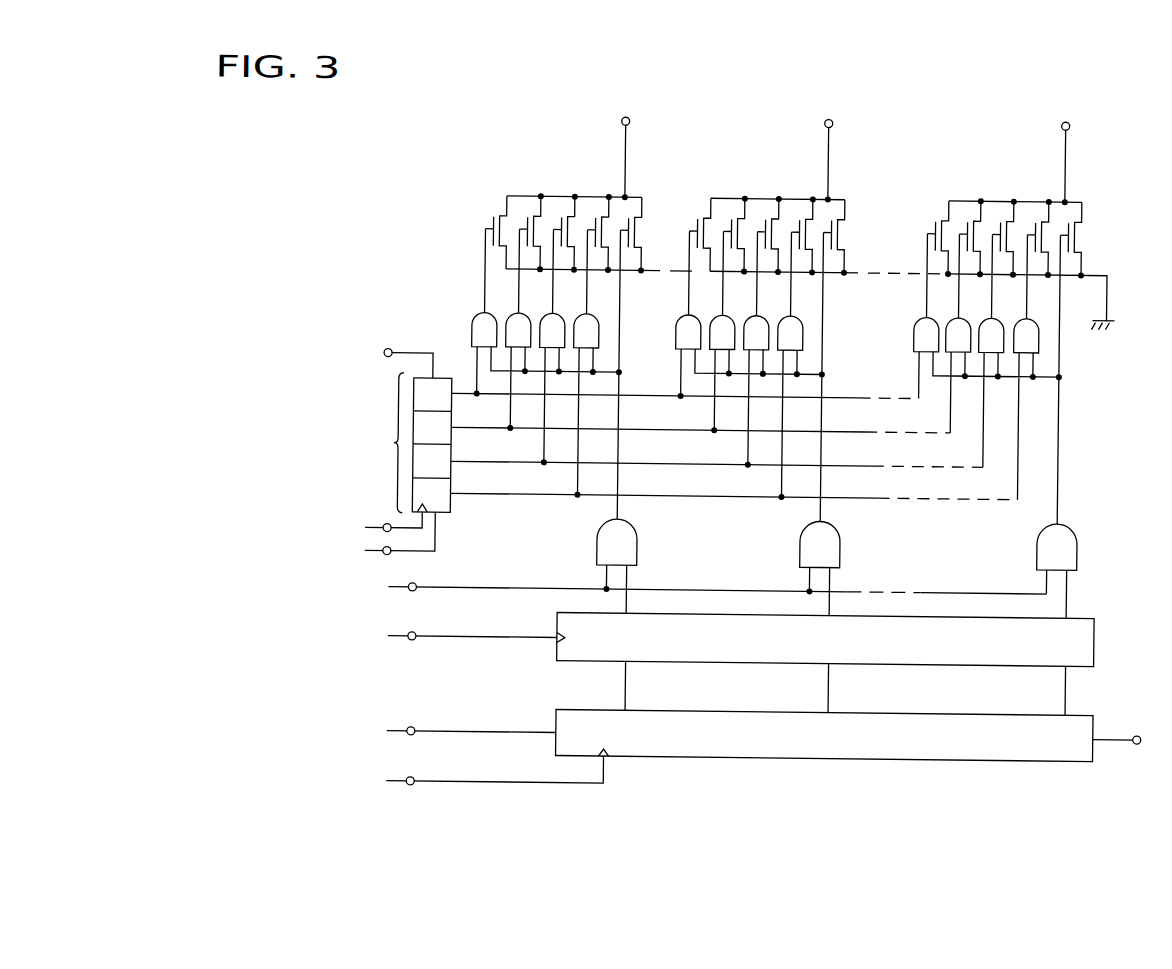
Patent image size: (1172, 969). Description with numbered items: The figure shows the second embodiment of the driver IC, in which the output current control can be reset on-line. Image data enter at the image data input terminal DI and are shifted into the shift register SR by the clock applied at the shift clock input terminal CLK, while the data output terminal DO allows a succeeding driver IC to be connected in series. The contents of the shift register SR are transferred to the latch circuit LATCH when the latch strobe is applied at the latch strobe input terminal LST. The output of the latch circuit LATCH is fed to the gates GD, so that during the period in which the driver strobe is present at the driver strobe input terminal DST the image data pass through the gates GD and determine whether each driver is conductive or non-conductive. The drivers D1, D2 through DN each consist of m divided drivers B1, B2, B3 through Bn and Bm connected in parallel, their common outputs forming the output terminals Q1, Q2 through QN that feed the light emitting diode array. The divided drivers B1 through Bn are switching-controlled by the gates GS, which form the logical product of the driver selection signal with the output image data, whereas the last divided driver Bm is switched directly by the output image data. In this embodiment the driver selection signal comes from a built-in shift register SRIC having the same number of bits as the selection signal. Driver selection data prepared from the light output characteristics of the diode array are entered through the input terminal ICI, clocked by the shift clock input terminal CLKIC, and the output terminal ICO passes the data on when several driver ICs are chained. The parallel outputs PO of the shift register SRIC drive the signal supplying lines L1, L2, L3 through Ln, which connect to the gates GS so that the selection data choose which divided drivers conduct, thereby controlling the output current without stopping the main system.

The driver D1 is at (610, 124).
The driver D2 is at (813, 122).
The driver DN is at (1049, 122).
The output terminal Q1 is at (621, 116).
The output terminal Q2 is at (824, 116).
The output terminal QN is at (1061, 116).
The divided driver B1 is at (940, 214).
The divided driver B2 is at (967, 215).
The divided driver B3 is at (1002, 215).
The divided driver Bn is at (1037, 215).
The divided driver Bm is at (1071, 215).
The gate GS is at (471, 330).
The gate GD is at (598, 547).
The signal supplying line L1 is at (623, 396).
The signal supplying line L2 is at (638, 429).
The signal supplying line L3 is at (654, 463).
The signal supplying line Ln is at (671, 495).
The shift register SRIC is at (452, 510).
The parallel outputs PO is at (380, 442).
The output terminal ICO is at (382, 356).
The shift clock input terminal CLKIC is at (383, 527).
The input terminal ICI is at (392, 557).
The driver strobe input terminal DST is at (414, 593).
The latch strobe input terminal LST is at (414, 642).
The image data input terminal DI is at (414, 729).
The data output terminal DO is at (1140, 729).
The shift clock input terminal CLK is at (414, 787).
The latch circuit LATCH is at (825, 664).
The shift register SR is at (824, 736).